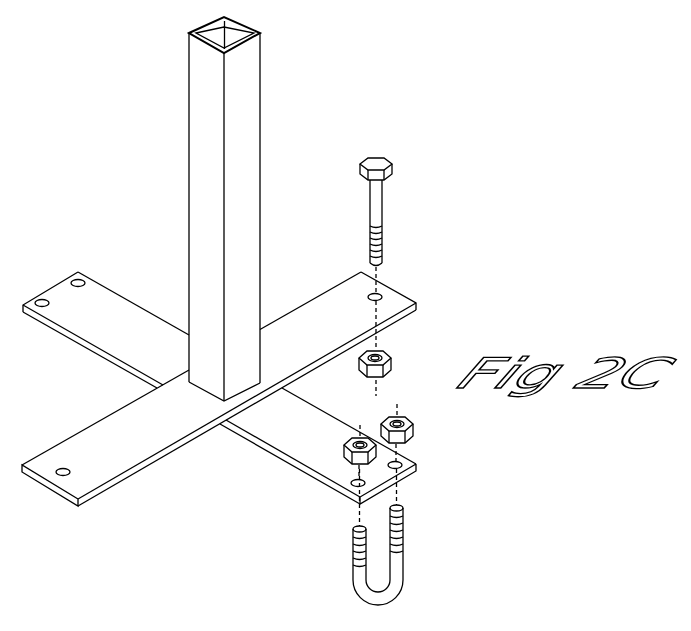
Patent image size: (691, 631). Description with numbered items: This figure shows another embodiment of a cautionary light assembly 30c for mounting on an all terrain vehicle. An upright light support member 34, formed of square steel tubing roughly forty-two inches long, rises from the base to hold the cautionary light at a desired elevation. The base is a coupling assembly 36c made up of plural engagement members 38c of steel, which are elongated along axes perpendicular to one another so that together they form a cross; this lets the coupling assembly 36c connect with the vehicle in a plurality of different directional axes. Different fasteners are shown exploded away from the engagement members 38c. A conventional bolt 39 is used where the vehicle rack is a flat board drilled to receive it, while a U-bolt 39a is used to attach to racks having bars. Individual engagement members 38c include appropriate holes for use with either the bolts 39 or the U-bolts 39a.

The cautionary light assembly 30c is at (461, 50).
The light support member 34 is at (210, 89).
The coupling assembly 36c is at (155, 252).
The engagement members 38c is at (270, 418).
The bolts 39 is at (373, 197).
The U-bolts 39a is at (397, 565).